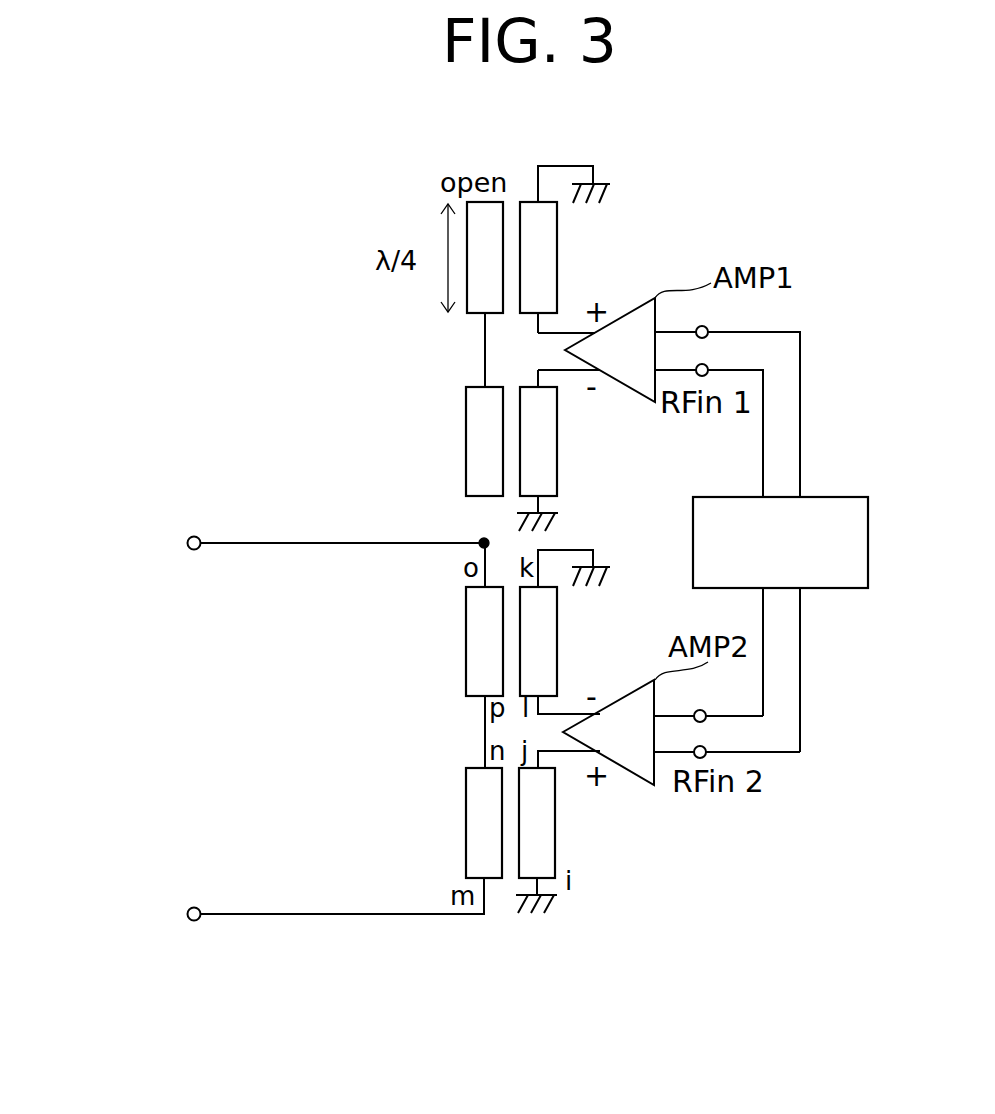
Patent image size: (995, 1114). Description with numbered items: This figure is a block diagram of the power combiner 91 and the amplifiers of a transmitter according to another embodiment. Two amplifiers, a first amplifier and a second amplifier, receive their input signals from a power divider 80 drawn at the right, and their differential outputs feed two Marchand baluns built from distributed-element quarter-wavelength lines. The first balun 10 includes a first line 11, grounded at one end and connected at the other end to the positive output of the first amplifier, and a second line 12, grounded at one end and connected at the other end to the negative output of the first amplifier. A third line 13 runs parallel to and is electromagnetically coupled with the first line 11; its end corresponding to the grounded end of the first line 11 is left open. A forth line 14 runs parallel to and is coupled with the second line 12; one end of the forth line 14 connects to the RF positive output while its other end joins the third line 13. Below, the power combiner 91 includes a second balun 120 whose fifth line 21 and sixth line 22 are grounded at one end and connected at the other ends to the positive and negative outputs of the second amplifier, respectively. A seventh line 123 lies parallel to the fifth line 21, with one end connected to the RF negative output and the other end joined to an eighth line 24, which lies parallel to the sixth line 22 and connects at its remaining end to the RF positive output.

The first balun 10 is at (340, 318).
The first line 11 is at (557, 237).
The second line 12 is at (557, 450).
The third line 13 is at (466, 313).
The forth line 14 is at (466, 400).
The fifth line 21 is at (556, 845).
The sixth line 22 is at (557, 637).
The eighth line 24 is at (466, 645).
The power divider 80 is at (825, 497).
The second balun 120 is at (332, 729).
The seventh line 123 is at (465, 825).
The power combiner 91 is at (68, 839).